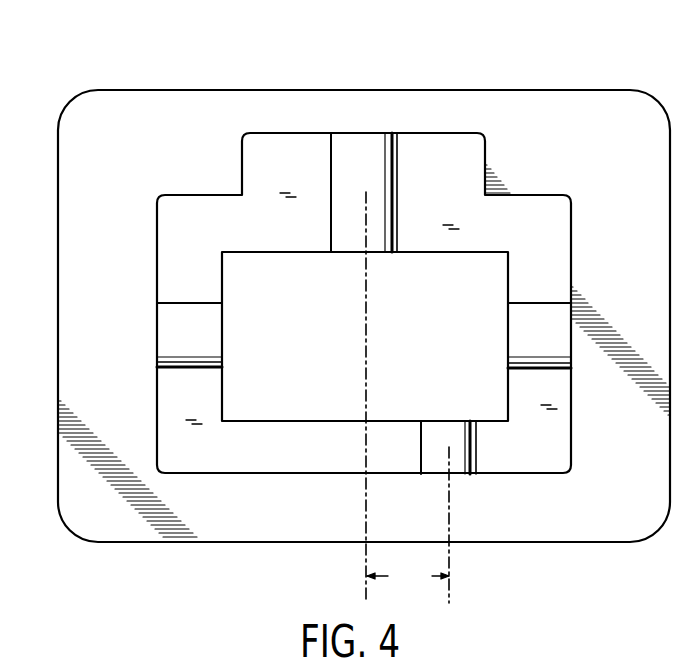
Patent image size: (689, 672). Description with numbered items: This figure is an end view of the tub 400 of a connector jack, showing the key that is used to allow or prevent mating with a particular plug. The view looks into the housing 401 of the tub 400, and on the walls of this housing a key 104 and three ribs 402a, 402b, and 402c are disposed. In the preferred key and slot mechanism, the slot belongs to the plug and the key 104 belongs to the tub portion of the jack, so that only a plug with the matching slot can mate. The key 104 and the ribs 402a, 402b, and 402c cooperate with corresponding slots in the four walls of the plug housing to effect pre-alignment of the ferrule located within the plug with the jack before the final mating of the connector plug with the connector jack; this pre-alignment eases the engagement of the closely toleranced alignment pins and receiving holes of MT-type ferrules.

The tub 400 is at (119, 66).
The housing 401 is at (597, 105).
The rib 402a is at (183, 337).
The rib 402b is at (522, 335).
The rib 402c is at (357, 147).
The key 104 is at (435, 432).